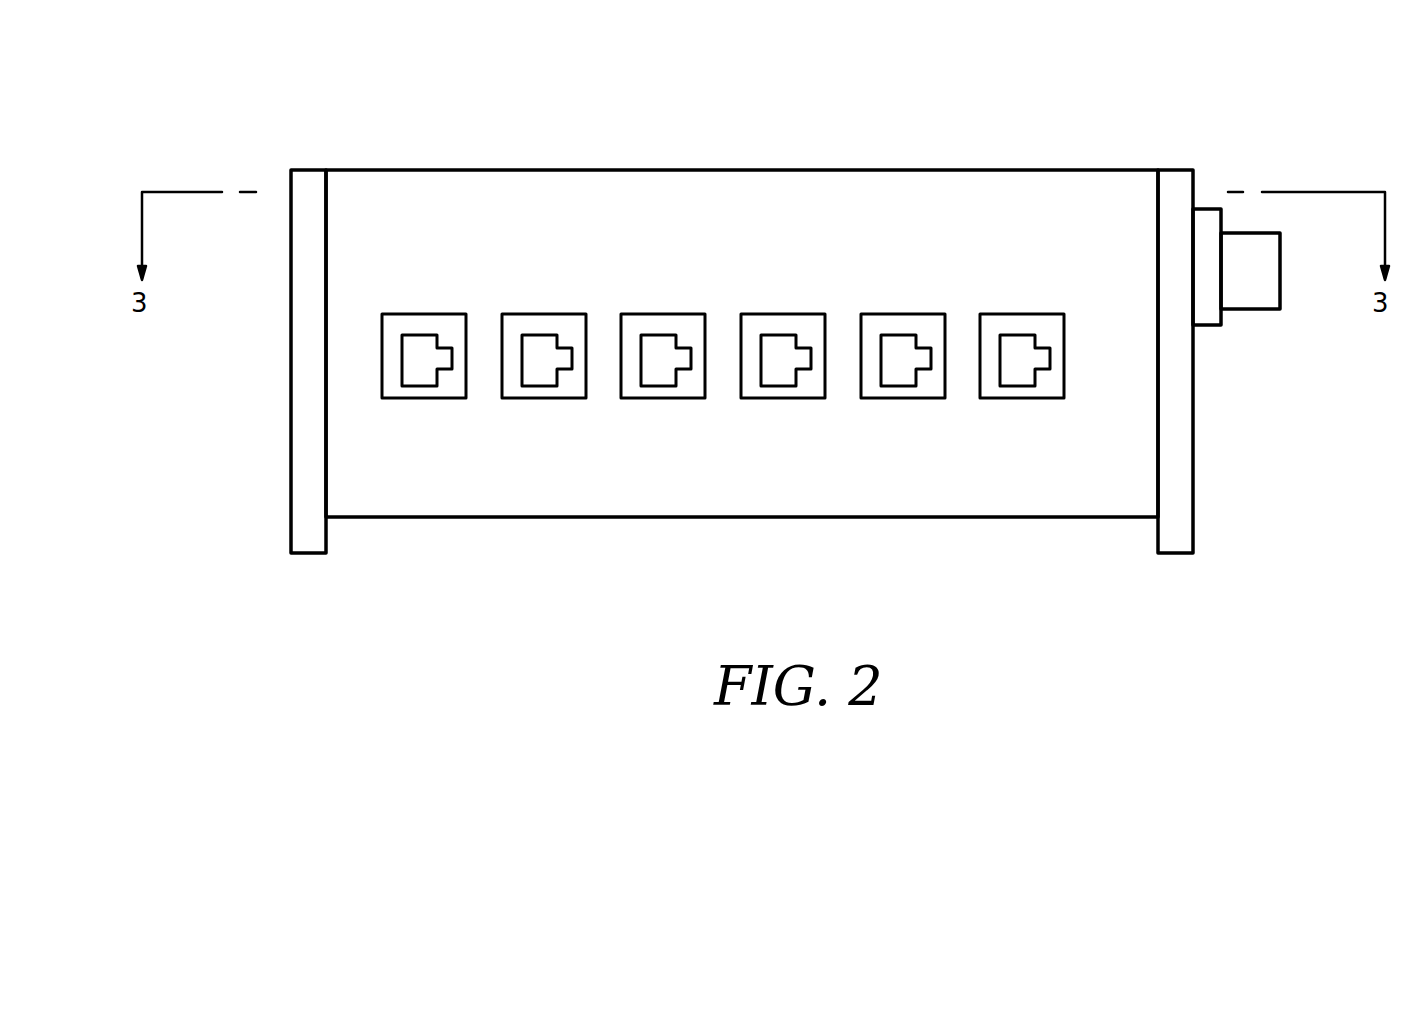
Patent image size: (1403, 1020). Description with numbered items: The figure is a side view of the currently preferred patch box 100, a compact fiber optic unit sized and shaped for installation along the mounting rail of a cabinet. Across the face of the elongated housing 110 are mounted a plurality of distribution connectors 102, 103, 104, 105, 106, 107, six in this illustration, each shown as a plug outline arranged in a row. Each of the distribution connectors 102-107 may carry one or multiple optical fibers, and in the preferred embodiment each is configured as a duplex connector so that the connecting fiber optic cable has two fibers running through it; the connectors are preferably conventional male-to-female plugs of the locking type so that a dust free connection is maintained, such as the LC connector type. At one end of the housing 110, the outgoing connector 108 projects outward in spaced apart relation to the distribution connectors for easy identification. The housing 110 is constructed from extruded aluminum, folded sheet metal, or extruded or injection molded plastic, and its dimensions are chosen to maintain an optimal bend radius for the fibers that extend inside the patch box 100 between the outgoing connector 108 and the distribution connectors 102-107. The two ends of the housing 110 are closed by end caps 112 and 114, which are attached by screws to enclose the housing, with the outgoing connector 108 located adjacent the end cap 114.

The patch box 100 is at (965, 171).
The distribution connector 102 is at (423, 314).
The distribution connector 103 is at (543, 314).
The distribution connector 104 is at (662, 314).
The distribution connector 105 is at (782, 314).
The distribution connector 106 is at (902, 314).
The distribution connector 107 is at (1021, 314).
The outgoing connector 108 is at (1250, 310).
The housing 110 is at (903, 207).
The end cap 112 is at (291, 519).
The end cap 114 is at (1194, 498).